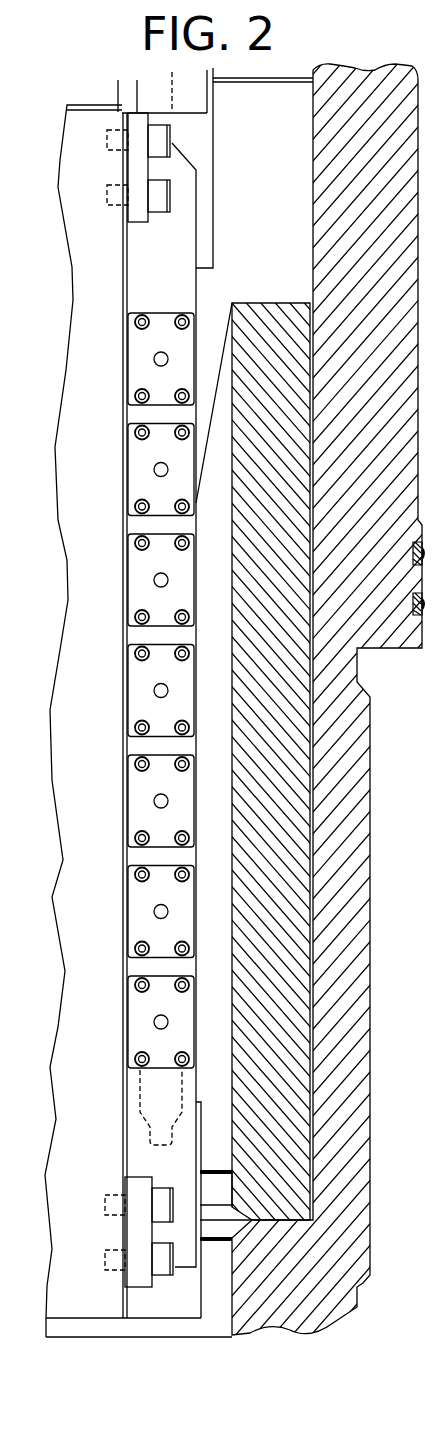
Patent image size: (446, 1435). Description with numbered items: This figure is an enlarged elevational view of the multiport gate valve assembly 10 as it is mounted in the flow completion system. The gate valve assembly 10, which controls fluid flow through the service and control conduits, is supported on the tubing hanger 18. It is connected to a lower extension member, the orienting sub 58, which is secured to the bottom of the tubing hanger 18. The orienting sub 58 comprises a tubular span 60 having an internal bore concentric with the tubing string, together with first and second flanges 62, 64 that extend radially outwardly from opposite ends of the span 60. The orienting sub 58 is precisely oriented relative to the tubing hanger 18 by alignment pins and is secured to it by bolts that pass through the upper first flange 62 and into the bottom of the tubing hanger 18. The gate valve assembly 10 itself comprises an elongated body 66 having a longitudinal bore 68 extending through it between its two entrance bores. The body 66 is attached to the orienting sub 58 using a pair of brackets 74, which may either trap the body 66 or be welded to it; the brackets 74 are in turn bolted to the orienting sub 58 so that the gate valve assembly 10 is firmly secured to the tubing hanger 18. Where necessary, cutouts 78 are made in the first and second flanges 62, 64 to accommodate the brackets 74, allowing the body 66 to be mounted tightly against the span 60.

The multiport gate valve assembly 10 is at (95, 1121).
The tubing hanger 18 is at (217, 95).
The orienting sub 58 is at (220, 252).
The tubular span 60 is at (128, 417).
The first flange 62 is at (214, 174).
The second flange 64 is at (197, 1265).
The elongated body 66 is at (197, 525).
The longitudinal bore 68 is at (183, 1095).
The brackets 74 is at (150, 1177).
The cutouts 78 is at (200, 134).